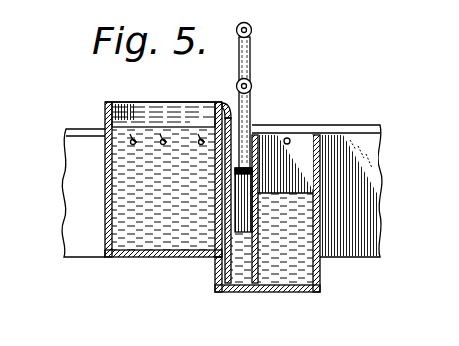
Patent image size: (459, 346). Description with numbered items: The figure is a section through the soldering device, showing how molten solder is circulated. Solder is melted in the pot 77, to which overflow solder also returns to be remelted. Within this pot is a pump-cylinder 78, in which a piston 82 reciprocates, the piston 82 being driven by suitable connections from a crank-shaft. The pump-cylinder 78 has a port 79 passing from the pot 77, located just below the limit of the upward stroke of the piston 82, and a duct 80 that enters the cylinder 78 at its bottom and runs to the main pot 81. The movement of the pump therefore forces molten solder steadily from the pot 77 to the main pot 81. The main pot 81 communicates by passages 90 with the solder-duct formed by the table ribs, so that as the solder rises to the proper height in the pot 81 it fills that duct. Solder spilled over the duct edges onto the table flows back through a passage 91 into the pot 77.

The pot 77 is at (298, 260).
The pump-cylinder 78 is at (247, 278).
The port 79 is at (322, 207).
The duct 80 is at (220, 270).
The main pot 81 is at (161, 230).
The piston 82 is at (259, 180).
The passages 90 is at (201, 139).
The passage 91 is at (290, 137).